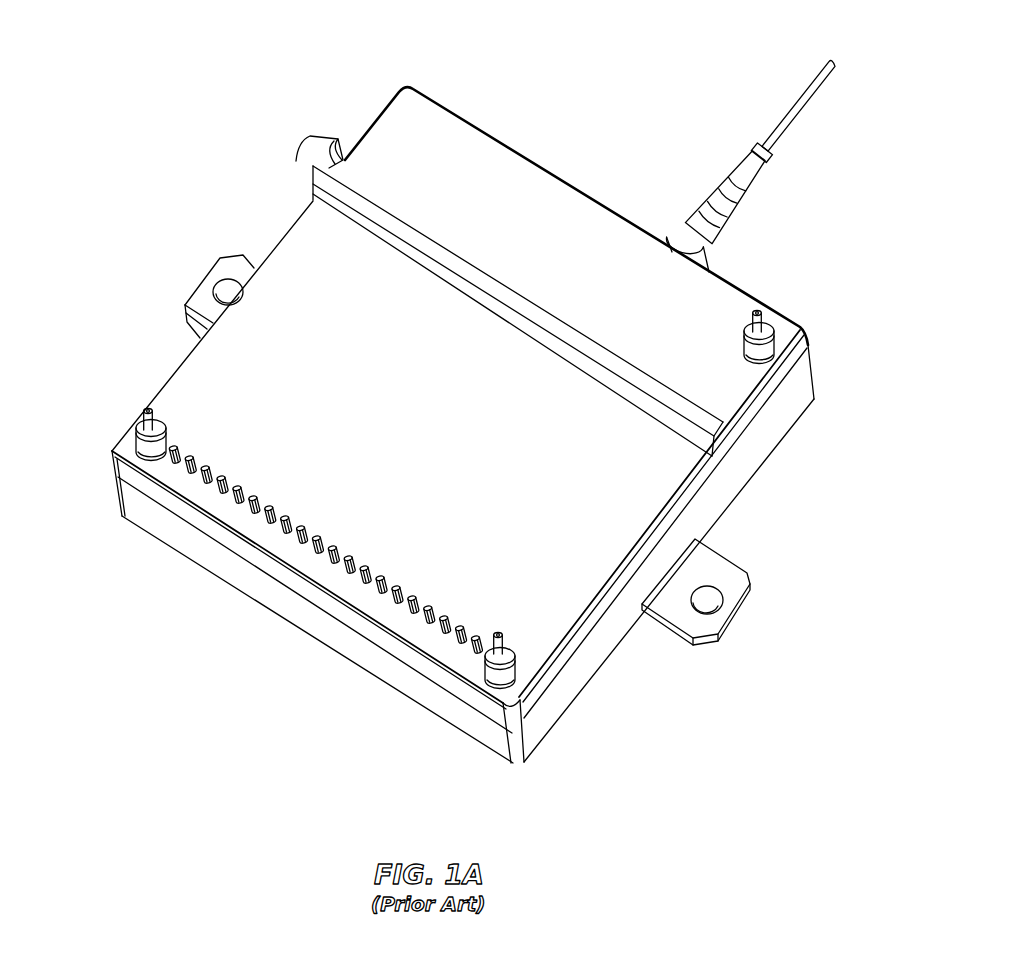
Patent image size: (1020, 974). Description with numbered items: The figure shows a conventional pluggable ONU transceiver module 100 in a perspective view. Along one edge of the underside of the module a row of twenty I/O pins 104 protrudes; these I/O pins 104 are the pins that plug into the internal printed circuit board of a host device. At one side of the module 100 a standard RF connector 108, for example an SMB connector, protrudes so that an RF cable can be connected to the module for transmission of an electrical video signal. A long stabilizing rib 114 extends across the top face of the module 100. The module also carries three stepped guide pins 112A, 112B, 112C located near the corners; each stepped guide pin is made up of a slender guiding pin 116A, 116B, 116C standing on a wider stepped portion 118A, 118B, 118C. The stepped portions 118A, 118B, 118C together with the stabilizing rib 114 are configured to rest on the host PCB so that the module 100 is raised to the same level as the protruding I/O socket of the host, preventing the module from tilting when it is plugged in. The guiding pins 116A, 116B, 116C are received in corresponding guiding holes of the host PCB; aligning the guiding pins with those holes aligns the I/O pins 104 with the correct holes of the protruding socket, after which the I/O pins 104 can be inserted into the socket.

The ONU transceiver module 100 is at (143, 130).
The I/O pins 104 is at (480, 633).
The RF connector 108 is at (315, 131).
The stabilizing rib 114 is at (520, 302).
The stepped guide pin 112A is at (155, 456).
The stepped guide pin 112B is at (509, 681).
The stepped guide pin 112C is at (767, 367).
The guiding pin 116A is at (145, 408).
The guiding pin 116B is at (498, 632).
The guiding pin 116C is at (757, 308).
The stepped portion 118A is at (136, 432).
The stepped portion 118B is at (517, 646).
The stepped portion 118C is at (769, 326).